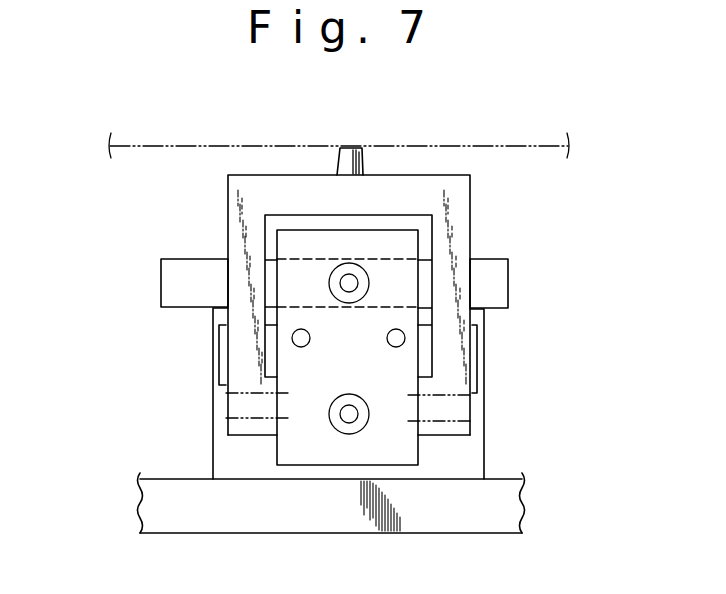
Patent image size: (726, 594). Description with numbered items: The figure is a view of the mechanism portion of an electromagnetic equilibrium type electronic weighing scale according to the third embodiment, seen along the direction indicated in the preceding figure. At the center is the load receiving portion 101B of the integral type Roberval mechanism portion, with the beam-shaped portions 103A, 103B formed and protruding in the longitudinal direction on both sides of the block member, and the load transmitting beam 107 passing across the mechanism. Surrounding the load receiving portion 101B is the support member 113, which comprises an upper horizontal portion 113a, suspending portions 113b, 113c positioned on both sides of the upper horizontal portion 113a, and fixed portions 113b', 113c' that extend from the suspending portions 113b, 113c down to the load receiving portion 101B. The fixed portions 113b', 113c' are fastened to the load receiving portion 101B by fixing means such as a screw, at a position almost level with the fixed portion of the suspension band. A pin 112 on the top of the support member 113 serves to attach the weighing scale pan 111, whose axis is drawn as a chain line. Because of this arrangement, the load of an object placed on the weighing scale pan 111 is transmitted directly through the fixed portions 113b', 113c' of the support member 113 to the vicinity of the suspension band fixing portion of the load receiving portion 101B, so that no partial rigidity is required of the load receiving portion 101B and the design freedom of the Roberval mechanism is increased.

The weighing scale pan 111 is at (202, 143).
The support member 113 is at (302, 190).
The upper horizontal portion 113a is at (407, 190).
The suspending portion 113b is at (178, 280).
The suspending portion 113c is at (528, 287).
The fixed portion 113b' is at (257, 491).
The fixed portion 113c' is at (470, 492).
The pin 112 is at (353, 160).
The load transmitting beam 107 is at (186, 283).
The beam-shaped portion 103A is at (477, 362).
The beam-shaped portion 103B is at (218, 385).
The load receiving portion 101B is at (323, 430).